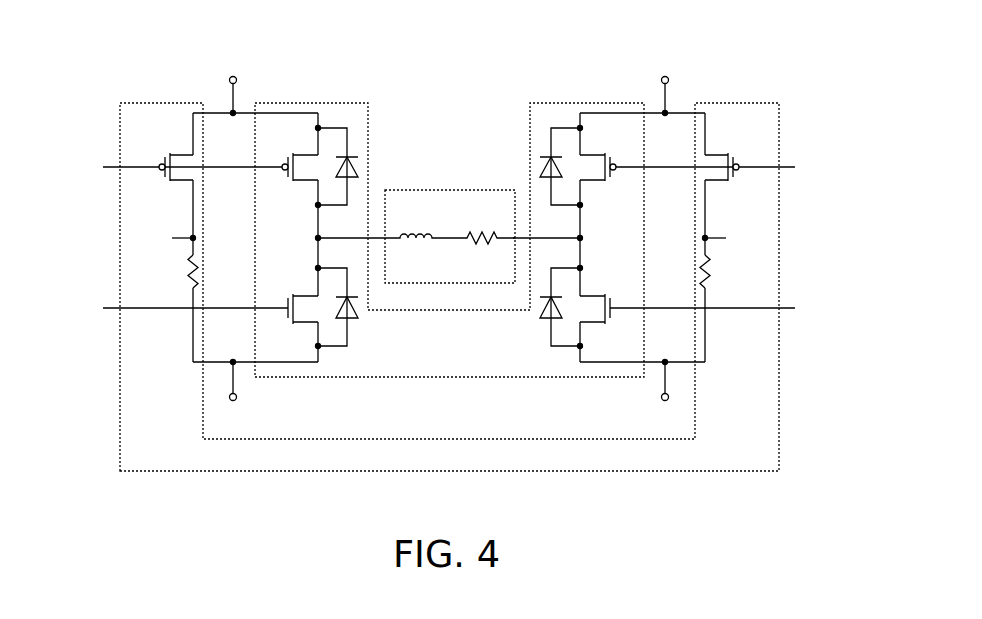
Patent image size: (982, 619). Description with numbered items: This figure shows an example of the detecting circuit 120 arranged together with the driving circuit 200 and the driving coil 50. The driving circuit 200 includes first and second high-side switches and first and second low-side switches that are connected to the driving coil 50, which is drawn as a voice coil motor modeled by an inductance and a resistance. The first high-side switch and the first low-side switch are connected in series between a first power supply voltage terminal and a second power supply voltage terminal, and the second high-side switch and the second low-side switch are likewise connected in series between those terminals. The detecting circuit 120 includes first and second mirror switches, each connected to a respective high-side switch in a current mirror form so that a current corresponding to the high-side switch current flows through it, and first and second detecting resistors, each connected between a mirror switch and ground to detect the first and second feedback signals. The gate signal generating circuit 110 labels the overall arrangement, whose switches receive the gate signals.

The gate signal generating circuit 110 is at (384, 27).
The detecting circuit 120 is at (197, 472).
The driving circuit 200 is at (330, 103).
The driving coil 50 is at (460, 190).